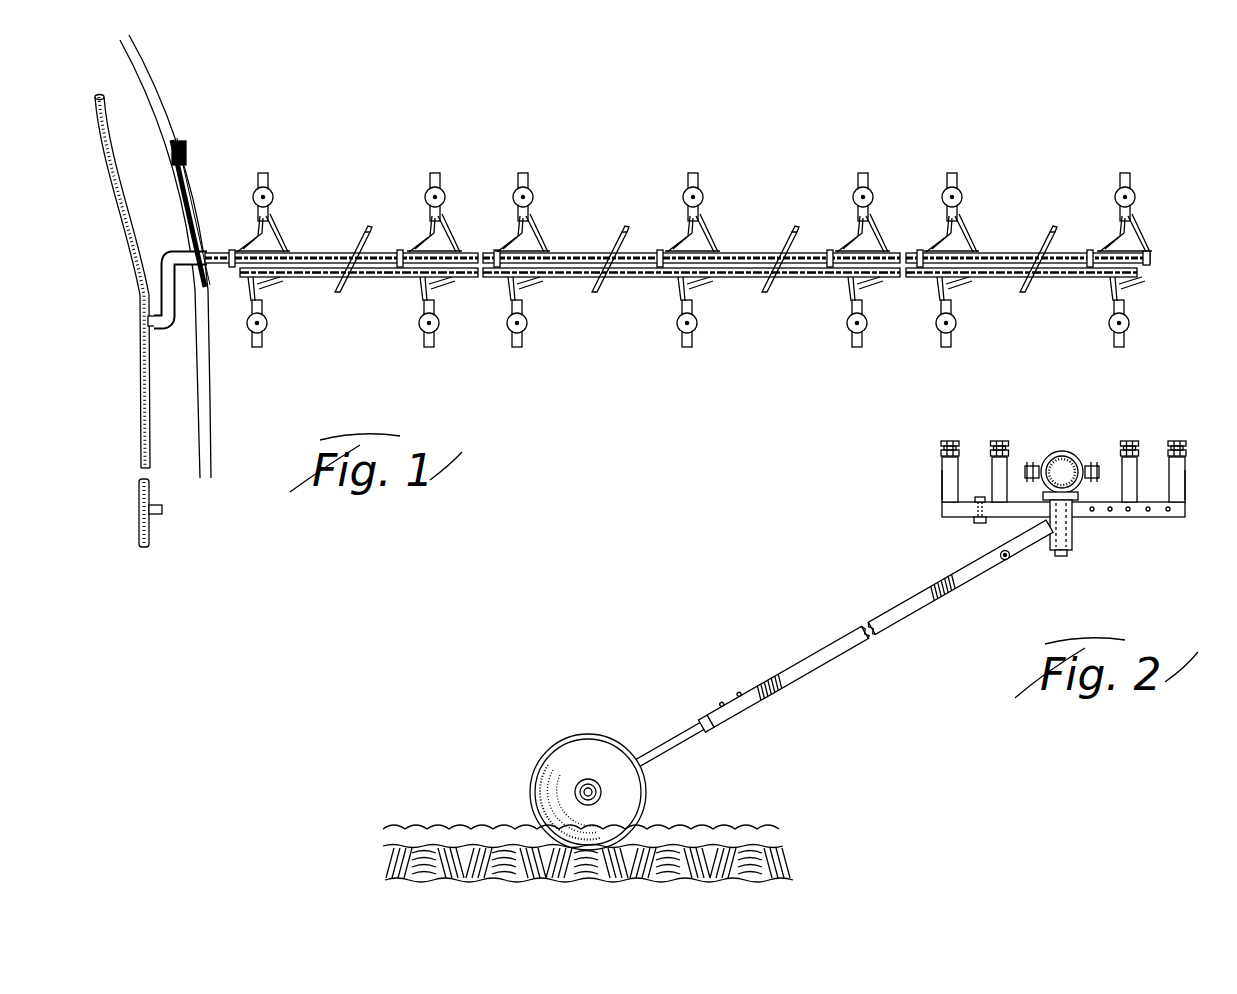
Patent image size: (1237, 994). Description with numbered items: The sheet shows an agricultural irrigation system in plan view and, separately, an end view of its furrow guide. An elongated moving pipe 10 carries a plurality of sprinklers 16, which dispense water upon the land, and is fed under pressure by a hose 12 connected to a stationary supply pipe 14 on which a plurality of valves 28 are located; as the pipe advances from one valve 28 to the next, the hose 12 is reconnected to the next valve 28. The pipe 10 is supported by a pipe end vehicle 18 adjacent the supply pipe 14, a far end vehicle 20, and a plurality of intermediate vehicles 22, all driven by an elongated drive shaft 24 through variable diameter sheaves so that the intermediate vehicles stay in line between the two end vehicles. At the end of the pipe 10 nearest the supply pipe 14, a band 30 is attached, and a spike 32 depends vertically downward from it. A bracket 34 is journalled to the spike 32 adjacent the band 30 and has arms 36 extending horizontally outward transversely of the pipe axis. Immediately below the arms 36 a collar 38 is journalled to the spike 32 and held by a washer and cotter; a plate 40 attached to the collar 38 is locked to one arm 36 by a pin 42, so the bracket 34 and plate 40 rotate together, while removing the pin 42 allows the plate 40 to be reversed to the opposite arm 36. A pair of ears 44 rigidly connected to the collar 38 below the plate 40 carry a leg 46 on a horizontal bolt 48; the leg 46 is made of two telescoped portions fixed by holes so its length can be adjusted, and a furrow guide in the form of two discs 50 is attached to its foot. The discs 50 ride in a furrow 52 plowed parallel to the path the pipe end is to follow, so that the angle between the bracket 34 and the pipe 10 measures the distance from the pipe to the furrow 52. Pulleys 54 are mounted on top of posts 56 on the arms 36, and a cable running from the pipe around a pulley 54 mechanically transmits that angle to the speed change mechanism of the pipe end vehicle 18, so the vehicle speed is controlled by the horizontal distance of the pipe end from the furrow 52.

In FIG. 1, the moving pipe 10 is at (790, 250).
In FIG. 2, the moving pipe 10 is at (1072, 461).
In FIG. 1, the hose 12 is at (178, 284).
In FIG. 1, the supply pipe 14 is at (150, 400).
In FIG. 1, the sprinklers 16 is at (358, 230).
In FIG. 1, the pipe end vehicle 18 is at (288, 216).
In FIG. 1, the far end vehicle 20 is at (1155, 227).
In FIG. 1, the intermediate vehicles 22 is at (534, 296).
In FIG. 1, the drive shaft 24 is at (715, 280).
In FIG. 1, the valves 28 is at (155, 327).
In FIG. 2, the band 30 is at (1050, 455).
In FIG. 2, the spike 32 is at (1074, 523).
In FIG. 2, the bracket 34 is at (1152, 525).
In FIG. 2, the arms 36 is at (955, 520).
In FIG. 2, the collar 38 is at (1073, 540).
In FIG. 2, the plate 40 is at (1000, 522).
In FIG. 2, the pin 42 is at (980, 496).
In FIG. 2, the ears 44 is at (1030, 568).
In FIG. 1, the leg 46 is at (188, 202).
In FIG. 2, the leg 46 is at (893, 620).
In FIG. 2, the horizontal bolt 48 is at (1007, 560).
In FIG. 1, the discs 50 is at (188, 152).
In FIG. 2, the discs 50 is at (590, 733).
In FIG. 1, the furrow 52 is at (203, 400).
In FIG. 2, the furrow 52 is at (690, 826).
In FIG. 2, the pulleys 54 is at (950, 438).
In FIG. 2, the posts 56 is at (940, 480).